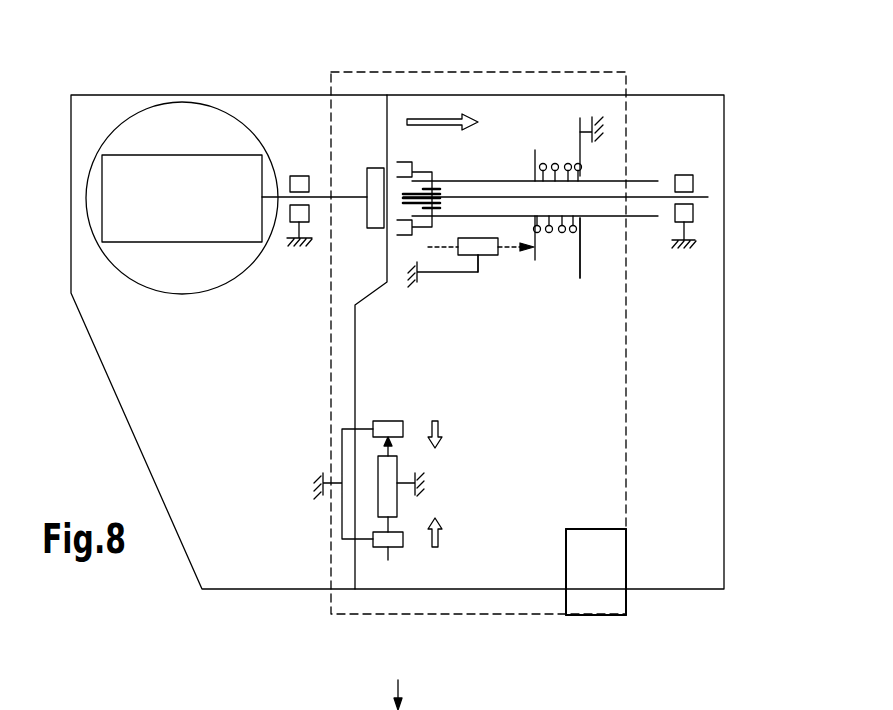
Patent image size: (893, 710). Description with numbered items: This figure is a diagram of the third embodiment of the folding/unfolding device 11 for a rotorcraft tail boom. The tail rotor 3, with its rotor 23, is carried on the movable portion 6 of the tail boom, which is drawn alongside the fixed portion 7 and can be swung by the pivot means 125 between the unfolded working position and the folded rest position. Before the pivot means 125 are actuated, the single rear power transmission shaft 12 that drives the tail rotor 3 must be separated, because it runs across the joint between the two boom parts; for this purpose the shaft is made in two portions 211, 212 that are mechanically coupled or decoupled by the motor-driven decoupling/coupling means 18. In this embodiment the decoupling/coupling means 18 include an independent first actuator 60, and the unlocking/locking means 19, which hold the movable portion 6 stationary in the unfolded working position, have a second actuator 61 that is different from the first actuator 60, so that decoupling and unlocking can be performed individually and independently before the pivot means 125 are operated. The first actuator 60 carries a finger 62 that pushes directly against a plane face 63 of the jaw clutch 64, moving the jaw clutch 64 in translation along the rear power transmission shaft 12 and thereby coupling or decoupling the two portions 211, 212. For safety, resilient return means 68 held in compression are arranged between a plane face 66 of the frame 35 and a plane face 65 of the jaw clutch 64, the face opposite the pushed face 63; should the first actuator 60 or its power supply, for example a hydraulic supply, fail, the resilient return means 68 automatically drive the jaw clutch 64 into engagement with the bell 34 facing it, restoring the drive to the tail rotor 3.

The tail rotor 3 is at (205, 120).
The rotor 23 is at (148, 170).
The portion of the rear power transmission shaft 212 is at (322, 197).
The bell 34 is at (375, 168).
The jaw clutch 64 is at (420, 168).
The finger 62 is at (513, 243).
The rear power transmission shaft 12 is at (641, 176).
The resilient return means 68 is at (556, 163).
The plane face of the jaw clutch 63 is at (535, 248).
The plane face of the jaw clutch 65 is at (540, 250).
The plane face of the frame 66 is at (580, 257).
The frame 35 is at (588, 128).
The portion of the rear power transmission shaft 211 is at (663, 200).
The first actuator 60 is at (465, 255).
The decoupling/coupling means 18 is at (493, 270).
The unlocking/locking means 19 is at (408, 429).
The second actuator 61 is at (398, 463).
The movable portion 6 is at (245, 575).
The transmission housing 7 is at (668, 572).
The pivot means 125 is at (596, 572).
The folding/unfolding device 11 is at (584, 626).